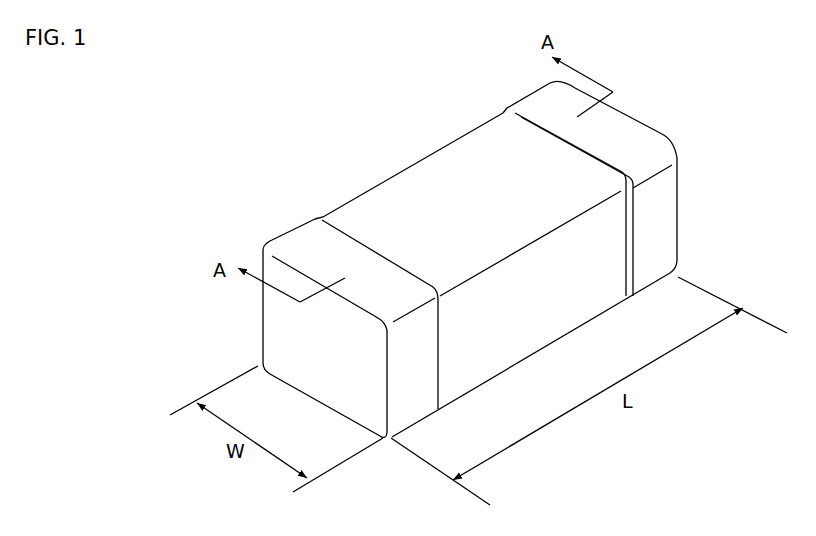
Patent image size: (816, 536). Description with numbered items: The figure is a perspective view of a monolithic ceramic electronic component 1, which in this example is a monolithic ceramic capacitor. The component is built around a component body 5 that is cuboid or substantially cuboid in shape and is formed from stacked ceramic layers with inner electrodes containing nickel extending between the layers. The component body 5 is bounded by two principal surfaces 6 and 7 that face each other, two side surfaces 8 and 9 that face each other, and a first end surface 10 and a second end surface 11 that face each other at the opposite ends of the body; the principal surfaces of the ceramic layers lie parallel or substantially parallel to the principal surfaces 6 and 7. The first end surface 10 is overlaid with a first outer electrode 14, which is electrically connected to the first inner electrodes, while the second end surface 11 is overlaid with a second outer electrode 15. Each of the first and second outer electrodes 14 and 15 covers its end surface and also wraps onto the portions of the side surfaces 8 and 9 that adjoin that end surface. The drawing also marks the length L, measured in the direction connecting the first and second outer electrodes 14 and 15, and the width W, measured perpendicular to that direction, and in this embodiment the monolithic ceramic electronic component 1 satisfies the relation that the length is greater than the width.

The monolithic ceramic electronic component 1 is at (325, 71).
The component body 5 is at (475, 127).
The principal surface 6 is at (372, 212).
The principal surface 7 is at (462, 373).
The side surface 8 is at (350, 215).
The side surface 9 is at (592, 297).
The first end surface 10 is at (302, 325).
The second end surface 11 is at (657, 218).
The first outer electrode 14 is at (308, 400).
The second outer electrode 15 is at (646, 122).